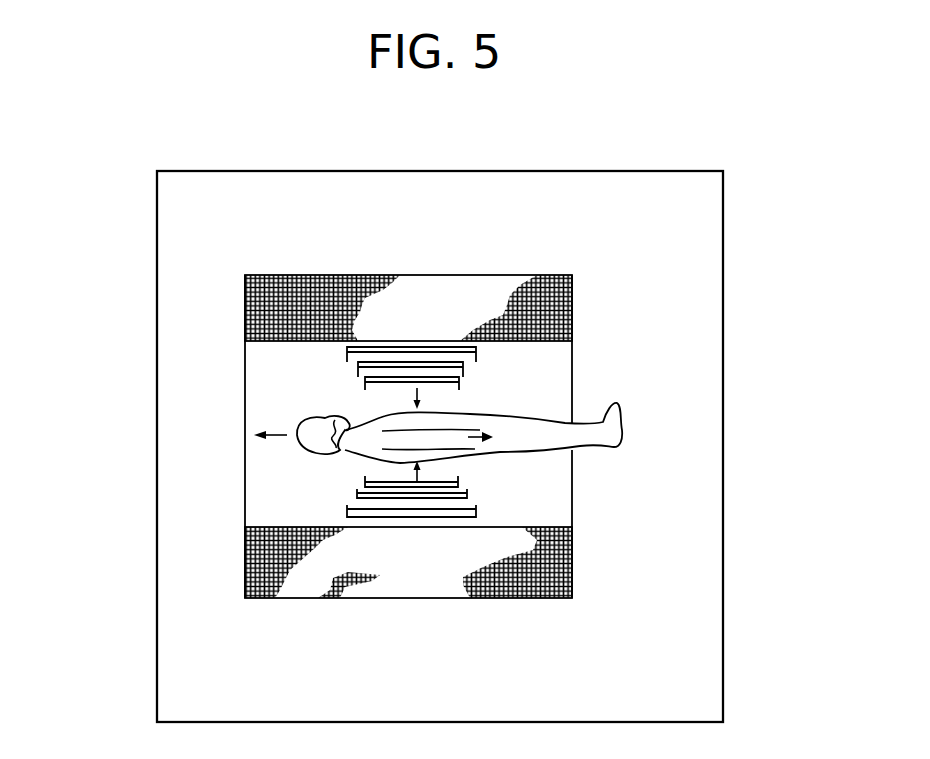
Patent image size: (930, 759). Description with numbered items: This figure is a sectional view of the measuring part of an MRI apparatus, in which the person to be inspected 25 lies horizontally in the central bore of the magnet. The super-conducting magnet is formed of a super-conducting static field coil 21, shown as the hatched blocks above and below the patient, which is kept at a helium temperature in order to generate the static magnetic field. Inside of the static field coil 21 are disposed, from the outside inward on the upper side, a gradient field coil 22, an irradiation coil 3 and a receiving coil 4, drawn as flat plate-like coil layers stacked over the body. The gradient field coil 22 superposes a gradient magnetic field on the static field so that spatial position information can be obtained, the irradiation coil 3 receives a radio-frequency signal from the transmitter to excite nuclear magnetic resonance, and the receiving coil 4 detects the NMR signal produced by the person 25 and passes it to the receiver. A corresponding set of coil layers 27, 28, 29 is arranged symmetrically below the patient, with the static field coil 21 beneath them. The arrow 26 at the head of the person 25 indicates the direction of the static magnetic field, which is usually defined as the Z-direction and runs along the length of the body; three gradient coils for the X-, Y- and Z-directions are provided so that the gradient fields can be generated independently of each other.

The super-conducting static field coil 21 is at (500, 275).
The gradient field coil 22 is at (478, 350).
The irradiation coil 3 is at (463, 367).
The receiving coil 4 is at (459, 383).
The patient 25 is at (623, 425).
The arrow 26 is at (273, 412).
The lower coil plate 27 is at (467, 485).
The lower coil plate 28 is at (472, 497).
The lower gradient coil 29 is at (340, 512).